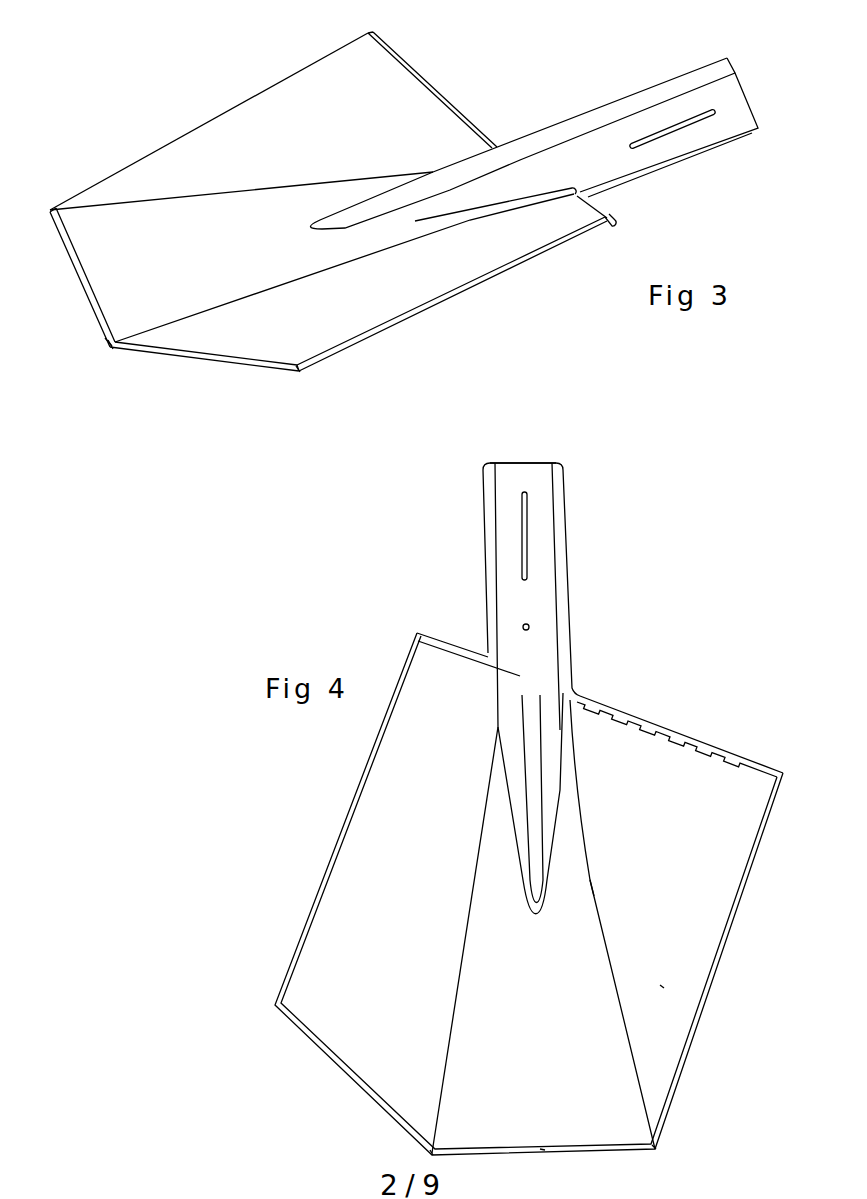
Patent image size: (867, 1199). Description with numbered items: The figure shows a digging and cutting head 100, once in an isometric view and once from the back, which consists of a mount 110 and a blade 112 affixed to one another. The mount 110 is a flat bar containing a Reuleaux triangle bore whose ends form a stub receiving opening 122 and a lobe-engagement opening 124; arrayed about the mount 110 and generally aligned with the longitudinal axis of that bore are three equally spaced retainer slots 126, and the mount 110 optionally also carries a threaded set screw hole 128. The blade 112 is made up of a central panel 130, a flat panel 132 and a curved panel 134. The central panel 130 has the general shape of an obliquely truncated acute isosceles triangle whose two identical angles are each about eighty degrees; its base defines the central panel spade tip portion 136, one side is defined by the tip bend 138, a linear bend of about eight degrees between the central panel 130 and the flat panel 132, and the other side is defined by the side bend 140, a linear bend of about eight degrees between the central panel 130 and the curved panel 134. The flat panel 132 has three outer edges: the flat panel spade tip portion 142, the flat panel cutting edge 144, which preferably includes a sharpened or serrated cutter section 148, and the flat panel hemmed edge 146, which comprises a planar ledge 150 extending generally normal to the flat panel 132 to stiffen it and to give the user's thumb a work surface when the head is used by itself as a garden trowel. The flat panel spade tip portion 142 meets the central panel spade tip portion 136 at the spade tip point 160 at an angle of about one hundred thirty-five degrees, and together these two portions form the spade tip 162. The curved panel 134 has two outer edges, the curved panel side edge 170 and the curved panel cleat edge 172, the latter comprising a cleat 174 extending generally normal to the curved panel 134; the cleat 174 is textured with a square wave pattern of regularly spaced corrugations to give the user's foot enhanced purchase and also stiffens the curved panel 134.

In FIG. 3, the digging and cutting head 100 is at (365, 261).
In FIG. 4, the digging and cutting head 100 is at (479, 879).
In FIG. 3, the mount 110 is at (534, 136).
In FIG. 4, the mount 110 is at (541, 585).
In FIG. 3, the blade 112 is at (298, 384).
In FIG. 4, the blade 112 is at (667, 1146).
In FIG. 4, the stub receiving opening 122 is at (543, 457).
In FIG. 4, the lobe-engagement opening 124 is at (532, 678).
In FIG. 3, the retainer slots 126 is at (670, 132).
In FIG. 4, the retainer slots 126 is at (530, 520).
In FIG. 4, the threaded set screw hole 128 is at (530, 622).
In FIG. 3, the central panel 130 is at (173, 263).
In FIG. 4, the central panel 130 is at (548, 1062).
In FIG. 3, the flat panel 132 is at (365, 311).
In FIG. 4, the flat panel 132 is at (387, 932).
In FIG. 3, the curved panel 134 is at (273, 118).
In FIG. 4, the curved panel 134 is at (663, 982).
In FIG. 3, the central panel spade tip portion 136 is at (60, 248).
In FIG. 3, the tip bend 138 is at (232, 303).
In FIG. 4, the tip bend 138 is at (475, 867).
In FIG. 3, the side bend 140 is at (337, 180).
In FIG. 4, the side bend 140 is at (608, 930).
In FIG. 3, the flat panel spade tip portion 142 is at (197, 360).
In FIG. 3, the flat panel cutting edge 144 is at (503, 280).
In FIG. 3, the flat panel hemmed edge 146 is at (603, 212).
In FIG. 3, the cutter section 148 is at (396, 320).
In FIG. 4, the planar ledge 150 is at (460, 643).
In FIG. 3, the spade tip point 160 is at (112, 348).
In FIG. 4, the spade tip 162 is at (419, 1153).
In FIG. 3, the curved panel side edge 170 is at (252, 97).
In FIG. 3, the curved panel cleat edge 172 is at (442, 97).
In FIG. 4, the cleat 174 is at (660, 722).